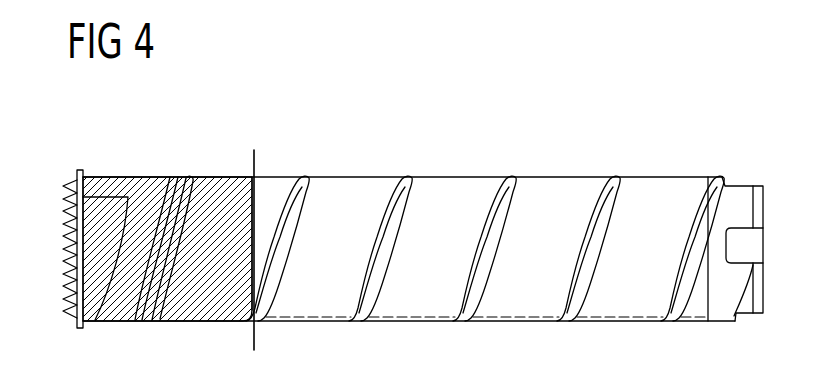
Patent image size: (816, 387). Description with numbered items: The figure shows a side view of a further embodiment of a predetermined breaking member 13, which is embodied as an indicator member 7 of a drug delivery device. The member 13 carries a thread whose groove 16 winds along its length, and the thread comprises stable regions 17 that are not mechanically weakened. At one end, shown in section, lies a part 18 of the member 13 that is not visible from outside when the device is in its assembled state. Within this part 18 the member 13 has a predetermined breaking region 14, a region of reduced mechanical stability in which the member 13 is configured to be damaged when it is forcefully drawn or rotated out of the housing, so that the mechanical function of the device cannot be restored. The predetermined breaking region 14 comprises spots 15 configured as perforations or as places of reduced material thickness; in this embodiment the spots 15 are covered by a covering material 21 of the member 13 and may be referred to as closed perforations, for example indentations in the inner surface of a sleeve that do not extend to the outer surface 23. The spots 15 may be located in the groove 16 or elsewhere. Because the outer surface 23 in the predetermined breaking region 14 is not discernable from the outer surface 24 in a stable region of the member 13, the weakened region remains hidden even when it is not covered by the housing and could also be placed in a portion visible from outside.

The indicator member 7 is at (674, 192).
The predetermined breaking member 13 is at (554, 190).
The predetermined breaking region 14 is at (155, 322).
The spots 15 is at (165, 215).
The groove 16 is at (369, 287).
The stable regions 17 is at (427, 300).
The part 18 is at (254, 138).
The covering material 21 is at (218, 290).
The outer surface 23 is at (211, 218).
The outer surface 24 is at (352, 193).